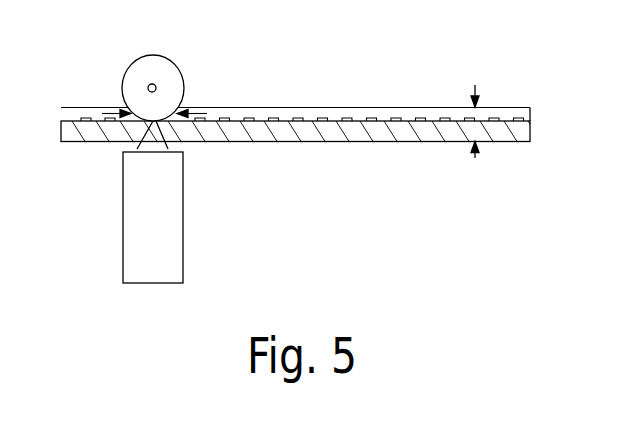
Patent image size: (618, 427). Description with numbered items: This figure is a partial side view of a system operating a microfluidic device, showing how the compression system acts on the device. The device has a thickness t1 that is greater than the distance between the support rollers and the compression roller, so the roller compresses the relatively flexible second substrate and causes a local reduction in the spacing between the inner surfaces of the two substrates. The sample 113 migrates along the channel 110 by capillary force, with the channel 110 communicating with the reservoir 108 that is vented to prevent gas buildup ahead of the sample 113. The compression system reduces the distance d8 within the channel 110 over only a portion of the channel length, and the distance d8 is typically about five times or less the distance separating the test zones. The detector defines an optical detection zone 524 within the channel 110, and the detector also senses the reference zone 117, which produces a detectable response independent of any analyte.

The reservoir 108 is at (500, 108).
The channel 110 is at (431, 114).
The sample 113 is at (470, 115).
The thickness t1 is at (475, 158).
The distance d8 is at (203, 114).
The reference zone 117 is at (151, 121).
The optical detection zone 524 is at (159, 121).